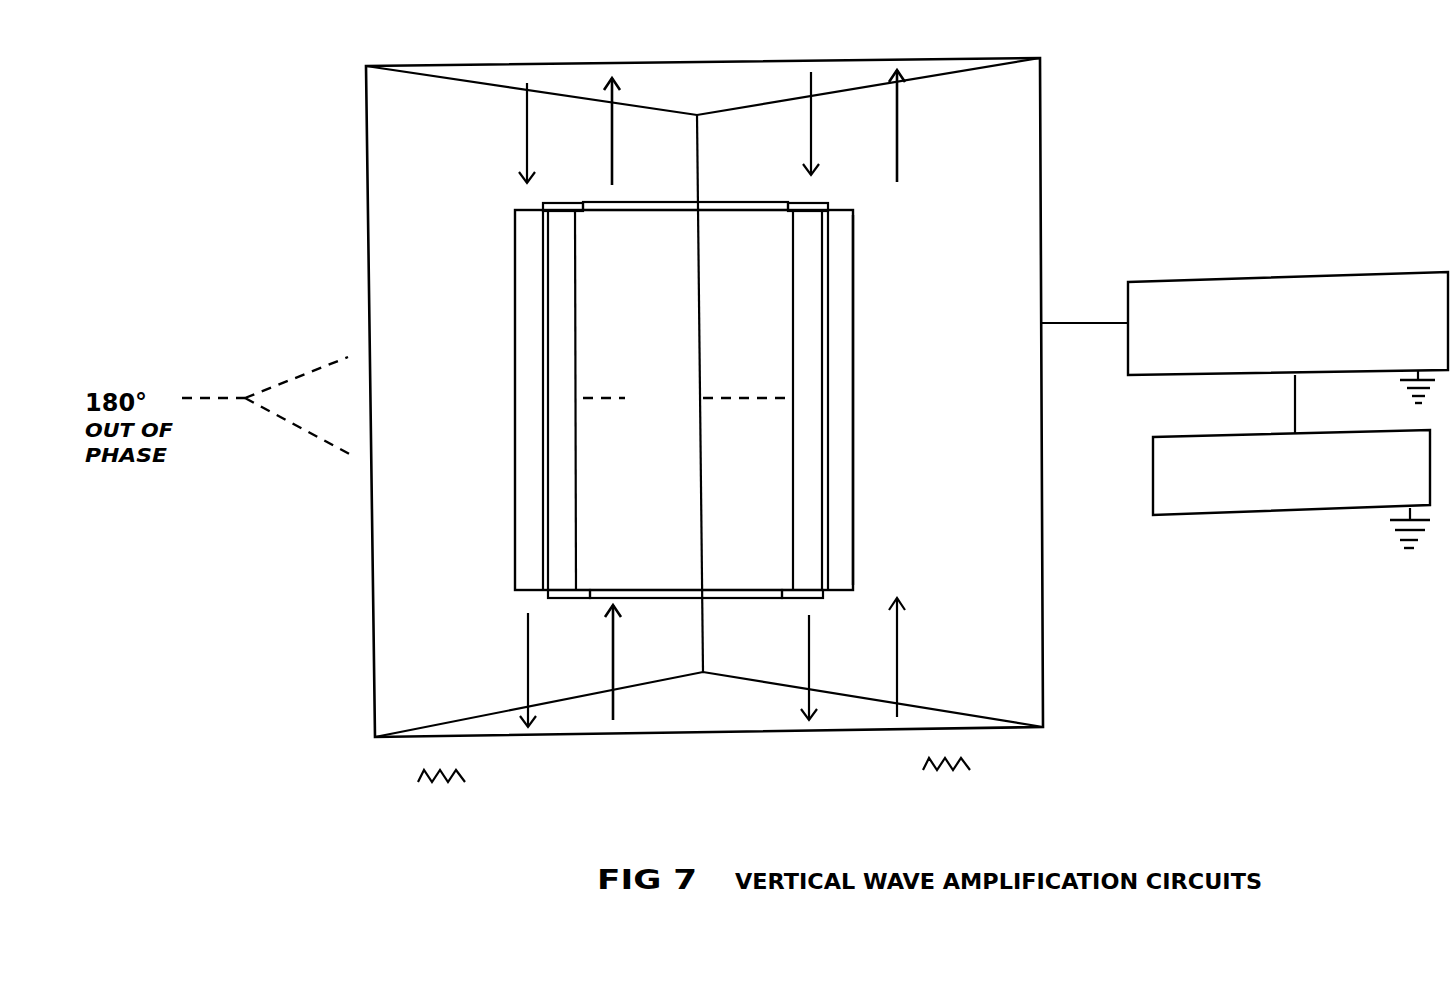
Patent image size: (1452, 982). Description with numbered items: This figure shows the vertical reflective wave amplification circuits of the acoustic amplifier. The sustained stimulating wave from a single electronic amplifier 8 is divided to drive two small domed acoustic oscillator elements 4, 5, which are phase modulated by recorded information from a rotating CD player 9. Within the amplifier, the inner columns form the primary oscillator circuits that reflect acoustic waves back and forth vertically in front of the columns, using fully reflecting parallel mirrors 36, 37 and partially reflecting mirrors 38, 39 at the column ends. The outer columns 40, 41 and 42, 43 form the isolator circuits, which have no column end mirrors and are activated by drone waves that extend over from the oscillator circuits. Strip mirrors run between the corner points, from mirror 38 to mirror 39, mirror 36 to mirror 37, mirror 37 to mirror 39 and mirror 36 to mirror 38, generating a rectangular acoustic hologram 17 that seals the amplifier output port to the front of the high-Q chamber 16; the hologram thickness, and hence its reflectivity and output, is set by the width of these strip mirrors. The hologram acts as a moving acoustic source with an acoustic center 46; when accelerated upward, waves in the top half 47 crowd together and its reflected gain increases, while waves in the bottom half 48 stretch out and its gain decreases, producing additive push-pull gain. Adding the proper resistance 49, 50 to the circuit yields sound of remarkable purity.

The acoustic dome oscillator element 4 is at (515, 405).
The acoustic dome oscillator element 5 is at (858, 386).
The electronic amplifier 8 is at (1244, 305).
The rotating CD player 9 is at (1291, 480).
The high-Q chamber 16 is at (1048, 108).
The acoustic hologram 17 is at (667, 195).
The fully reflecting parallel mirror 36 is at (660, 611).
The fully reflecting parallel mirror 37 is at (802, 606).
The partially reflecting mirror 38 is at (561, 193).
The partially reflecting mirror 39 is at (808, 191).
The outer column 40 is at (501, 146).
The outer column 41 is at (503, 654).
The outer column 42 is at (883, 144).
The outer column 43 is at (888, 644).
The acoustic center 46 is at (686, 400).
The top half of the hologram 47 is at (675, 305).
The bottom half of the hologram 48 is at (675, 495).
The resistance 49 is at (468, 793).
The resistance 50 is at (972, 780).